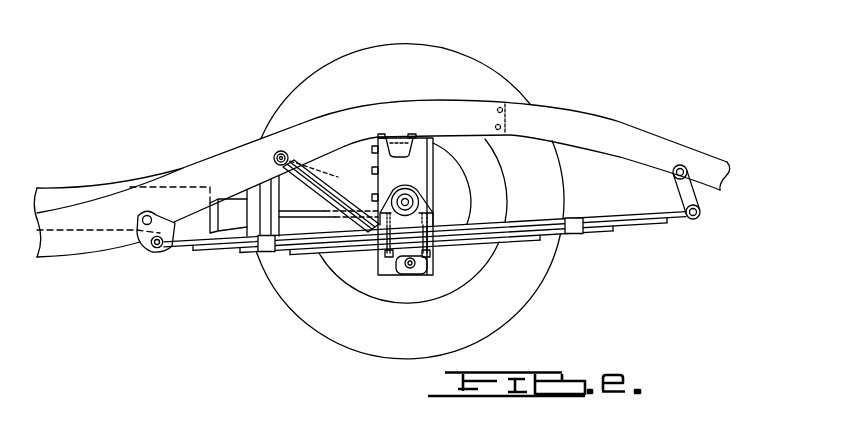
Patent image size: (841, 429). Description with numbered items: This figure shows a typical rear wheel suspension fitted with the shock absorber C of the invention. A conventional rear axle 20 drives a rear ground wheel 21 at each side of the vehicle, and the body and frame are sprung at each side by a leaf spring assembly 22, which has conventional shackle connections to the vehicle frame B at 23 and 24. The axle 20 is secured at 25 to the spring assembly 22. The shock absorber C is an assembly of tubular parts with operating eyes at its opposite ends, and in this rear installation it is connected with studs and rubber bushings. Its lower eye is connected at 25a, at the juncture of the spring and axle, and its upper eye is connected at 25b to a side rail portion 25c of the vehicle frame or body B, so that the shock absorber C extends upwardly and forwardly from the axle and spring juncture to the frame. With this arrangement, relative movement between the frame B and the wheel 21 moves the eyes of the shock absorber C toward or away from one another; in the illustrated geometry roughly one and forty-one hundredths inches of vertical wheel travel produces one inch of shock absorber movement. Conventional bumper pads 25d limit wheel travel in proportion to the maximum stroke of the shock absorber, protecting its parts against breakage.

The vehicle frame B is at (633, 137).
The shock absorber C is at (328, 190).
The rear axle 20 is at (420, 189).
The rear ground wheel 21 is at (525, 288).
The leaf spring assembly 22 is at (613, 227).
The shackle connection 23 is at (153, 251).
The shackle connection 24 is at (700, 211).
The axle-to-spring securement 25 is at (433, 247).
The shock absorber lower connection 25a is at (418, 270).
The shock absorber upper connection 25b is at (282, 150).
The side rail portion 25c is at (248, 157).
The bumper pad 25d is at (413, 136).